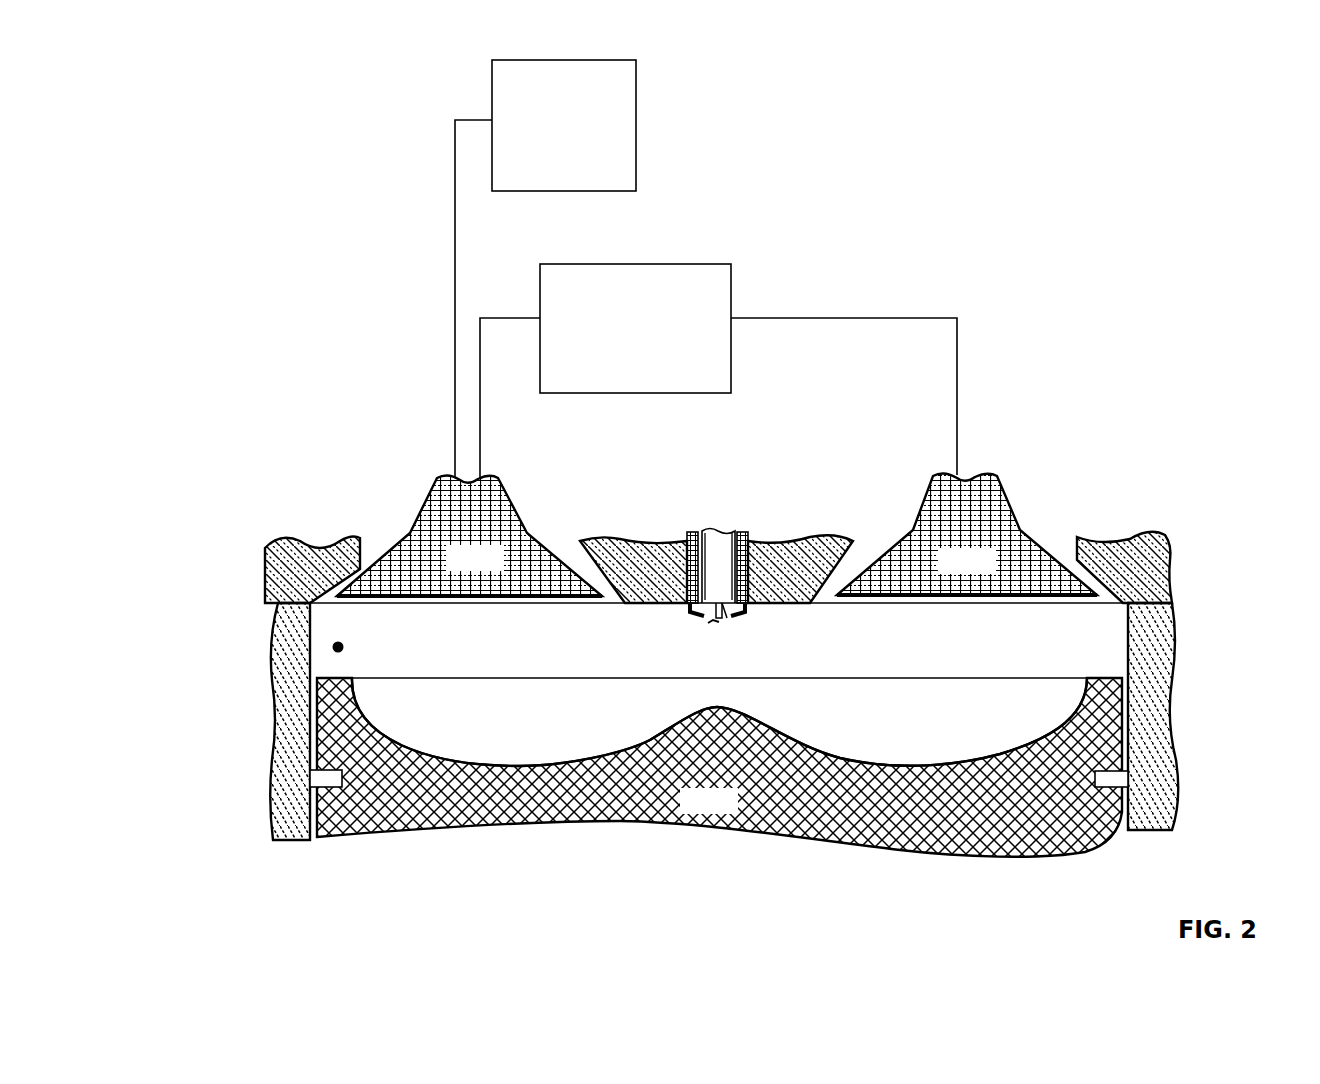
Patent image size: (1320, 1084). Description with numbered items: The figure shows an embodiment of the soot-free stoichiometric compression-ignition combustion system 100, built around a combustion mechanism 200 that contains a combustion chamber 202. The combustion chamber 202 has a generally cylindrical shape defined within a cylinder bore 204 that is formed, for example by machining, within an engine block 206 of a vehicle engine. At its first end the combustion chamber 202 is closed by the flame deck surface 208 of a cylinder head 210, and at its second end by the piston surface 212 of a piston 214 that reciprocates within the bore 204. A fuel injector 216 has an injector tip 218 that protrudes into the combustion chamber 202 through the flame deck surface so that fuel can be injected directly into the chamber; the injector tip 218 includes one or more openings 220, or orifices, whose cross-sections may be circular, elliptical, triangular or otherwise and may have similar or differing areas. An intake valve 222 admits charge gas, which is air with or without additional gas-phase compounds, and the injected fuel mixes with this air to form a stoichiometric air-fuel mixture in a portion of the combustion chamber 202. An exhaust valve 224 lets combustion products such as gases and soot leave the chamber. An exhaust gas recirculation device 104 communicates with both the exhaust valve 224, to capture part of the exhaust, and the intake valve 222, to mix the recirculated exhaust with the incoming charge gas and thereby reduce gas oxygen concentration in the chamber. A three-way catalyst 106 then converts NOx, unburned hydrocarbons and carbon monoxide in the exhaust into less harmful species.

The combustion system 100 is at (1080, 164).
The exhaust gas recirculation device 104 is at (718, 371).
The three-way catalyst 106 is at (545, 269).
The combustion mechanism 200 is at (246, 460).
The combustion chamber 202 is at (333, 649).
The cylinder bore 204 is at (1127, 643).
The engine block 206 is at (275, 713).
The flame deck surface 208 is at (686, 587).
The cylinder head 210 is at (265, 558).
The piston surface 212 is at (538, 758).
The piston 214 is at (719, 767).
The fuel injector 216 is at (719, 583).
The injector tip 218 is at (712, 626).
The opening 220 is at (727, 622).
The intake valve 222 is at (967, 534).
The exhaust valve 224 is at (469, 535).